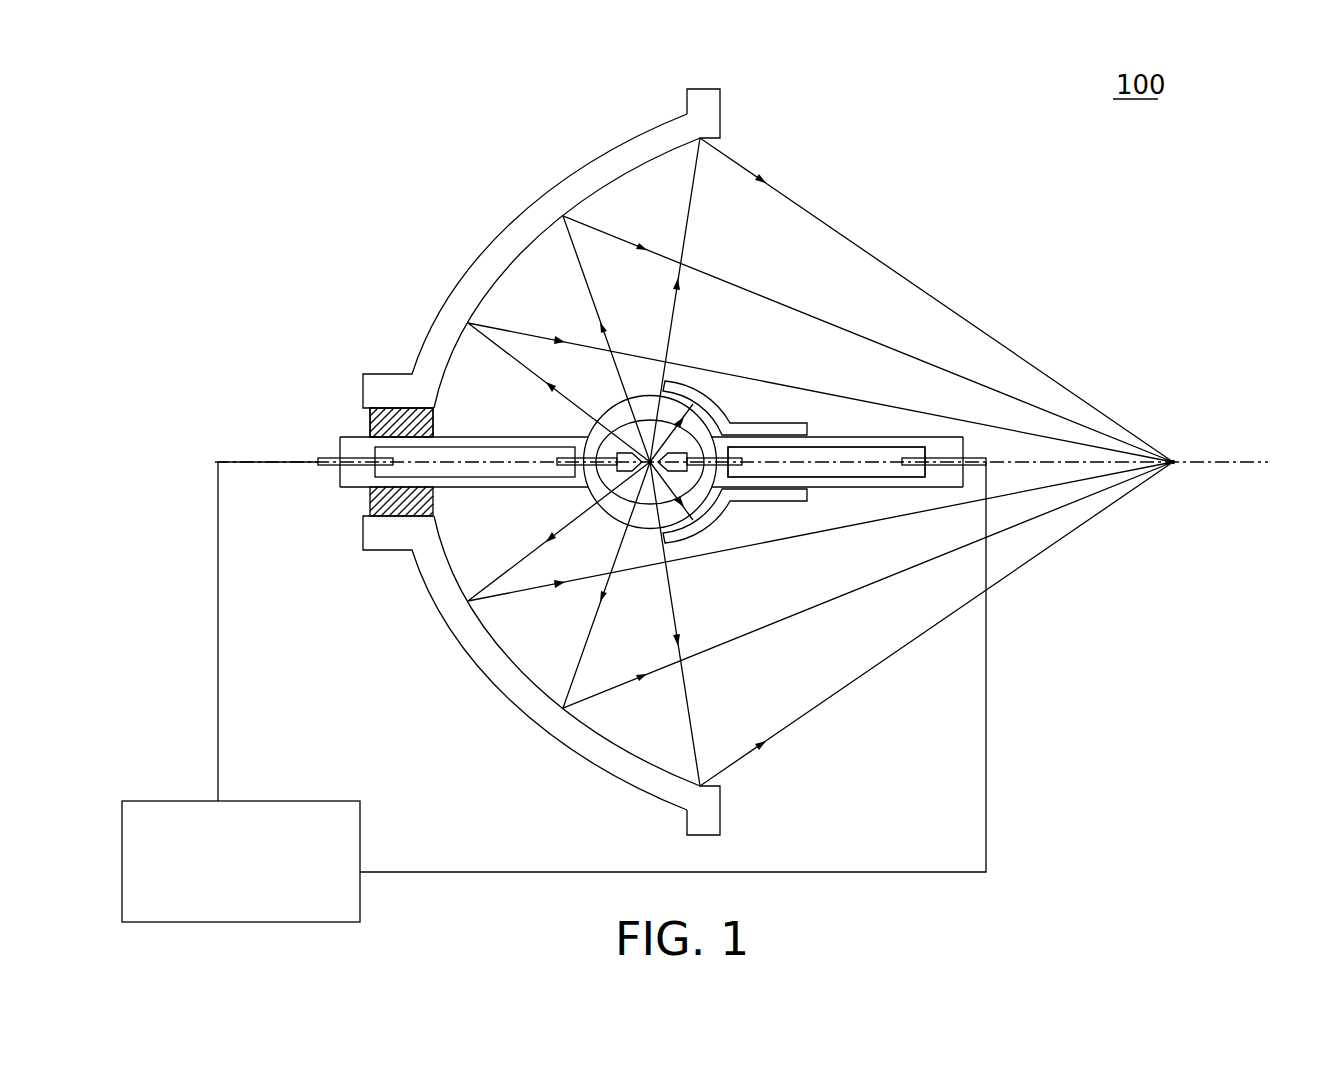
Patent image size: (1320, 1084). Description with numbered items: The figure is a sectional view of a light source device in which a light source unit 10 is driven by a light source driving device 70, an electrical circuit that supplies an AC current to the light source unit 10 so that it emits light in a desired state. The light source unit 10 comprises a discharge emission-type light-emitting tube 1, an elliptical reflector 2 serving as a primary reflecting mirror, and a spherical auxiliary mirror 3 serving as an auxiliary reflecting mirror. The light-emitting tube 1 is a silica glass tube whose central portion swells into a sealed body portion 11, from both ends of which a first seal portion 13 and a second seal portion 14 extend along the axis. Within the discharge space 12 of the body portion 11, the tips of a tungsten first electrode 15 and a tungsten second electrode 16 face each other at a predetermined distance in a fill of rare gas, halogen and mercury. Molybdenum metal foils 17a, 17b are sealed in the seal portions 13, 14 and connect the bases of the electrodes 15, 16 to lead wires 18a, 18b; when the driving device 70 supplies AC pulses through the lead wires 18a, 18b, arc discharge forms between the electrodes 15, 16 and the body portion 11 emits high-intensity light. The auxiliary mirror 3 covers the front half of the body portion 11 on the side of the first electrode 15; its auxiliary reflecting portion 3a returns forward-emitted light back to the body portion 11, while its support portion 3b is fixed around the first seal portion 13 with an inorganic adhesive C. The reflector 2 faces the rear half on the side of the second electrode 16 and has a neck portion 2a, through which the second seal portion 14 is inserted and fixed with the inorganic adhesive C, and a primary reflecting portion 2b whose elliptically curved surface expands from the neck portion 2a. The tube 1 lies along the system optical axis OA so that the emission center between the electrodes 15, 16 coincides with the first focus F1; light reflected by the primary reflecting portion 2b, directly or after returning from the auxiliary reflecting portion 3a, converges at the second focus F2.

The light source unit 10 is at (842, 172).
The light-emitting tube 1 is at (602, 453).
The reflector 2 is at (519, 462).
The neck portion 2a is at (392, 538).
The primary reflecting portion 2b is at (530, 718).
The auxiliary mirror 3 is at (737, 454).
The auxiliary reflecting portion 3a is at (688, 383).
The support portion 3b is at (765, 501).
The body portion 11 is at (592, 432).
The discharge space 12 is at (648, 504).
The first seal portion 13 is at (885, 487).
The second seal portion 14 is at (412, 560).
The first electrode 15 is at (728, 448).
The second electrode 16 is at (548, 478).
The metal foil 17a is at (862, 456).
The metal foil 17b is at (474, 456).
The lead wire 18a is at (950, 457).
The lead wire 18b is at (337, 458).
The light source driving device 70 is at (262, 812).
The first focus F1 is at (645, 463).
The second focus F2 is at (1175, 455).
The system optical axis OA is at (1228, 466).
The inorganic adhesive C is at (368, 418).